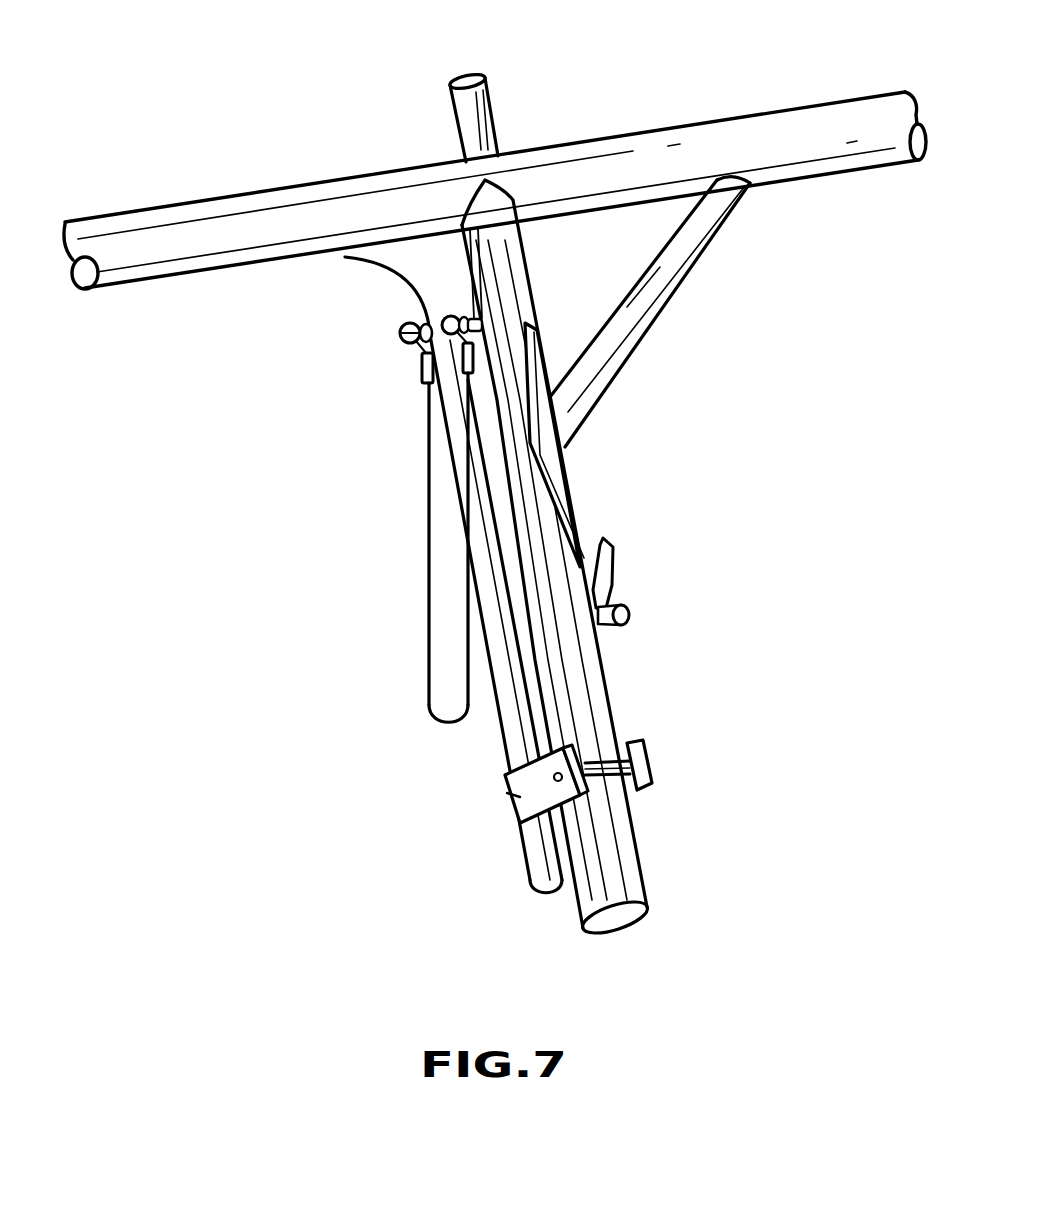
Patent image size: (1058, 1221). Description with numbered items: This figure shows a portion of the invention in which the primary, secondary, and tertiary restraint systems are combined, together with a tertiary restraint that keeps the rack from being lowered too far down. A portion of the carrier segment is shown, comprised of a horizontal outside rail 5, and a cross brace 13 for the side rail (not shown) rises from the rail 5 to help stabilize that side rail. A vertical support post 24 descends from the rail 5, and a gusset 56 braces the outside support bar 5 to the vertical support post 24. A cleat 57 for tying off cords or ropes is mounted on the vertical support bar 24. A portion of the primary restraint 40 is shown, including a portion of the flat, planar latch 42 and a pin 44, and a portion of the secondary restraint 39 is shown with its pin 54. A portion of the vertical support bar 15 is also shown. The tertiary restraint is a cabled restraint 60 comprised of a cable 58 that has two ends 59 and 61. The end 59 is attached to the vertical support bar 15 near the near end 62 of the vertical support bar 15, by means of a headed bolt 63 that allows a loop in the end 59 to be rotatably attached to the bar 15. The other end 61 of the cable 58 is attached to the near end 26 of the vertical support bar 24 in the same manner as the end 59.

The horizontal outside rail 5 is at (202, 220).
The cross brace 13 is at (493, 123).
The near end 26 is at (612, 504).
The vertical support bar 24 is at (590, 710).
The gusset 56 is at (688, 255).
The cleat 57 is at (545, 422).
The near end 62 is at (362, 279).
The vertical support bar 15 is at (517, 723).
The cabled restraint 60 is at (405, 475).
The headed bolt 63 is at (398, 331).
The end 61 is at (475, 365).
The end 59 is at (420, 357).
The cable 58 is at (429, 577).
The primary restraint 40 is at (686, 530).
The latch 42 is at (605, 588).
The pin 44 is at (630, 610).
The secondary restraint 39 is at (517, 795).
The pin 54 is at (655, 780).